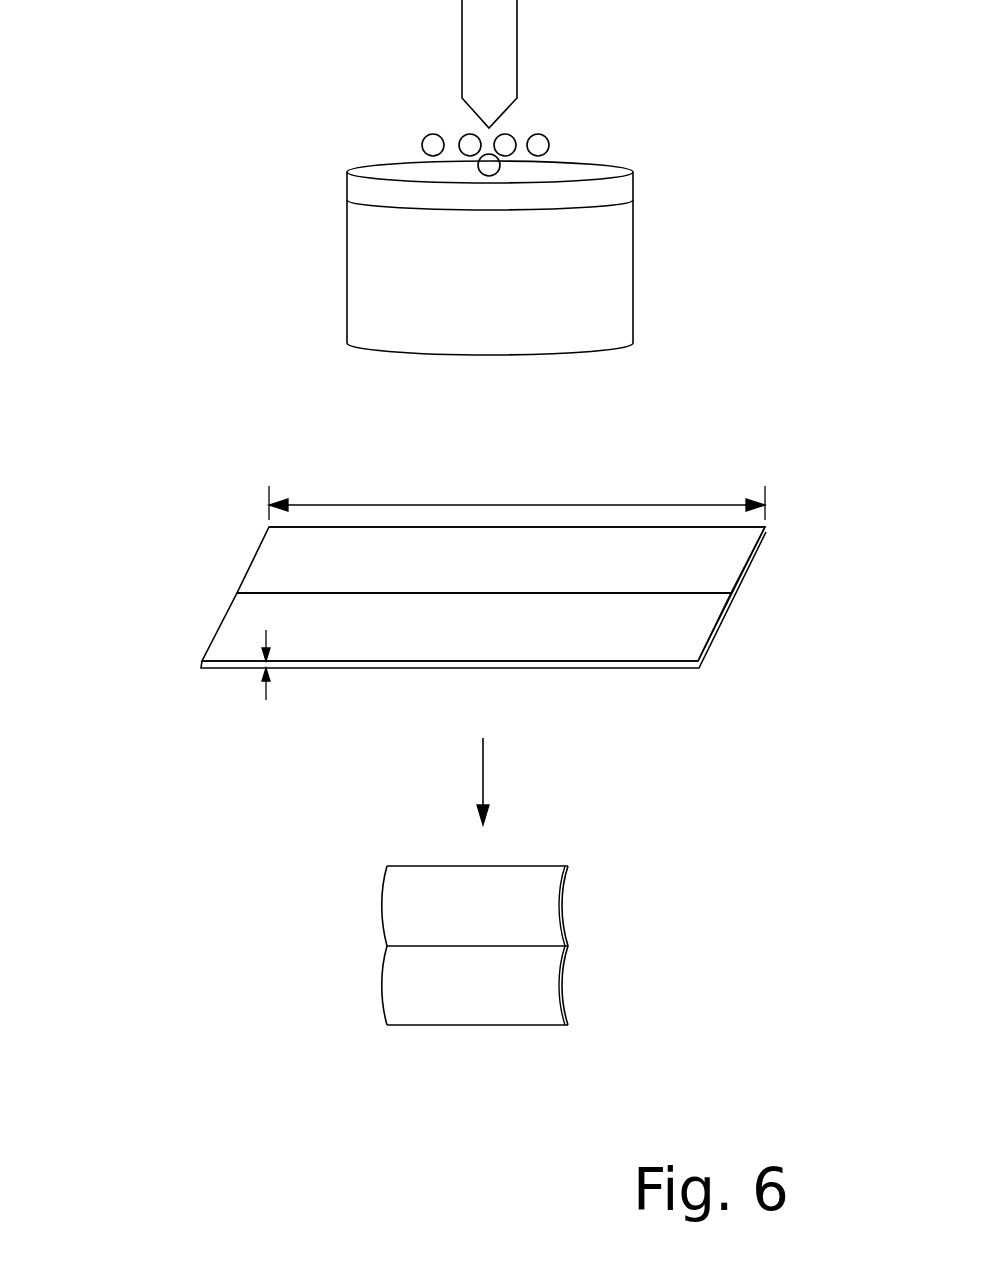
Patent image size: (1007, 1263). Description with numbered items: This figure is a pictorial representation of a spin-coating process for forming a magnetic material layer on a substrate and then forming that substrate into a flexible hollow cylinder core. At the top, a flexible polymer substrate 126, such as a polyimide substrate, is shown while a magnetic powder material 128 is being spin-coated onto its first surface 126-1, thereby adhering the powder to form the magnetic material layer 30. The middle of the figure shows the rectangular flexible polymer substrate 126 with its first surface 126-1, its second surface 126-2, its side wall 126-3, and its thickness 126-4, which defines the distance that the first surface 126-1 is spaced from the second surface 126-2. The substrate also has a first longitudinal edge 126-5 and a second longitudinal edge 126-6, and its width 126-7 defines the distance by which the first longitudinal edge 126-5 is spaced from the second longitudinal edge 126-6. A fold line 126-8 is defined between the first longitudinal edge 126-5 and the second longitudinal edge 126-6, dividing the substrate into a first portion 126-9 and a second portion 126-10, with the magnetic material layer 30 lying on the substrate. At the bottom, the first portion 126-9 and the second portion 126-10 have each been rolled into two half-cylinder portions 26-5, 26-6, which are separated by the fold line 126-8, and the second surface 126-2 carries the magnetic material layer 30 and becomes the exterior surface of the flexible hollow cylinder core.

The flexible polymer substrate 126 is at (448, 203).
The first surface 126-1 is at (388, 170).
The second surface 126-2 is at (348, 188).
The magnetic powder material 128 is at (588, 140).
The side wall 126-3 is at (201, 664).
The thickness 126-4 is at (266, 692).
The first longitudinal edge 126-5 is at (582, 527).
The second longitudinal edge 126-6 is at (477, 666).
The width 126-7 is at (647, 505).
The fold line 126-8 is at (423, 593).
The first portion 126-9 is at (233, 555).
The second portion 126-10 is at (193, 623).
The magnetic material layer 30 is at (713, 638).
The half-cylinder portion 26-5 is at (333, 905).
The half-cylinder portion 26-6 is at (356, 993).